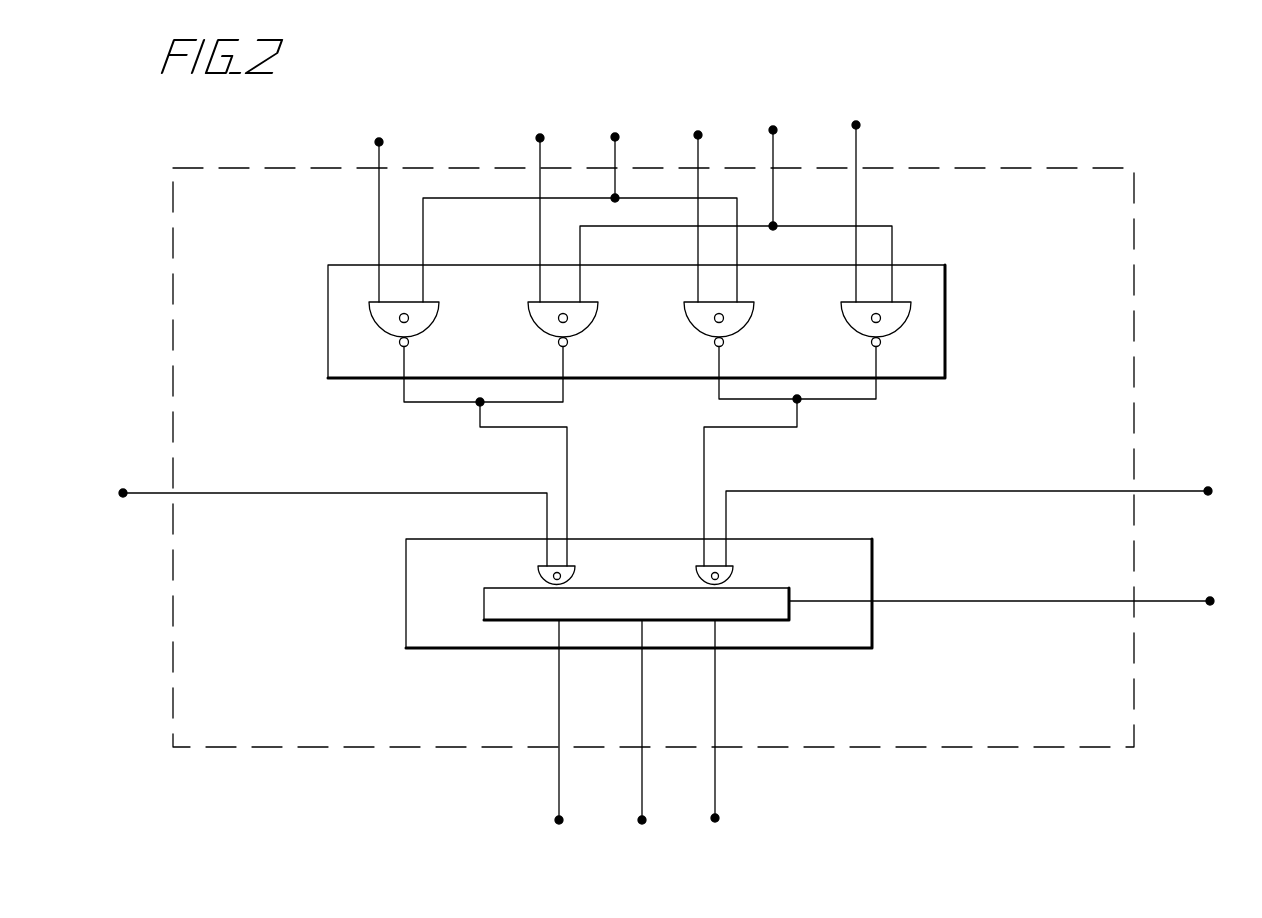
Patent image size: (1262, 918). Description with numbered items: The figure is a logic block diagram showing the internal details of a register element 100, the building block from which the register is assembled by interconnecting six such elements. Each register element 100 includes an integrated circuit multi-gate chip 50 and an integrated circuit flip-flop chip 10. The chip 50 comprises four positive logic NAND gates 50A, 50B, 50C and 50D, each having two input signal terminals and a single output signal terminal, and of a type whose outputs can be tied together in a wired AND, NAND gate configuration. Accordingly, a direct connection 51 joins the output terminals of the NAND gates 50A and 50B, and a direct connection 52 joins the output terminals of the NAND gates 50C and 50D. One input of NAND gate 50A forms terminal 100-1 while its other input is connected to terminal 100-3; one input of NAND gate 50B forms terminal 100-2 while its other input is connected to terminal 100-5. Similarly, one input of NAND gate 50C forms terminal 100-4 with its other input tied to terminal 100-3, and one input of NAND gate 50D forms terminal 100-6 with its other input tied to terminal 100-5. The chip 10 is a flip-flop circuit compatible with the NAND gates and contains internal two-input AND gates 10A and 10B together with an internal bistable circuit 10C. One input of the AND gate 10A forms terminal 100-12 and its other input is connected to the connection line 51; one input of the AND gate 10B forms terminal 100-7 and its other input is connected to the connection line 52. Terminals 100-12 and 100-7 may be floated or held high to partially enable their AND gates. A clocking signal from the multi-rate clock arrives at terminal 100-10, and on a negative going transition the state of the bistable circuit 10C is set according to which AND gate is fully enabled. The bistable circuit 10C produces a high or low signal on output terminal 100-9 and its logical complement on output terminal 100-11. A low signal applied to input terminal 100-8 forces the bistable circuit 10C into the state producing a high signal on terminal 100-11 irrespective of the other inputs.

The register element 100 is at (1124, 214).
The integrated circuit multi-gate chip 50 is at (944, 379).
The NAND gate 50A is at (390, 339).
The NAND gate 50B is at (549, 339).
The NAND gate 50C is at (711, 339).
The NAND gate 50D is at (868, 339).
The direct connection 51 is at (410, 403).
The direct connection 52 is at (829, 400).
The integrated circuit flip-flop chip 10 is at (873, 550).
The AND gate 10A is at (538, 578).
The AND gate 10B is at (696, 578).
The internal bistable circuit 10C is at (790, 588).
The terminal 100-1 is at (375, 142).
The terminal 100-2 is at (537, 139).
The terminal 100-3 is at (611, 140).
The terminal 100-4 is at (695, 139).
The terminal 100-5 is at (770, 134).
The terminal 100-6 is at (854, 129).
The terminal 100-7 is at (1243, 460).
The terminal 100-8 is at (1209, 597).
The terminal 100-9 is at (718, 821).
The terminal 100-10 is at (654, 848).
The terminal 100-11 is at (555, 820).
The terminal 100-12 is at (125, 491).